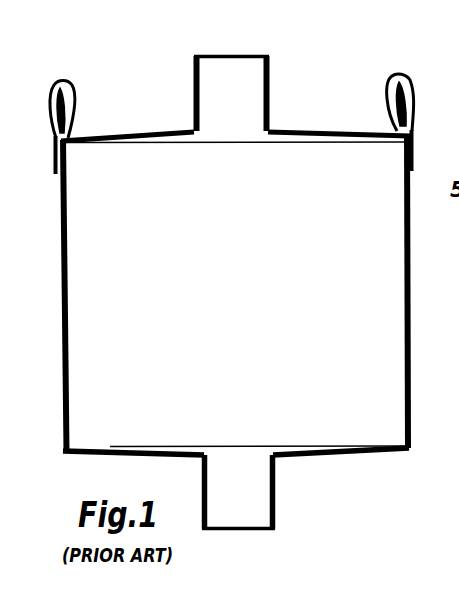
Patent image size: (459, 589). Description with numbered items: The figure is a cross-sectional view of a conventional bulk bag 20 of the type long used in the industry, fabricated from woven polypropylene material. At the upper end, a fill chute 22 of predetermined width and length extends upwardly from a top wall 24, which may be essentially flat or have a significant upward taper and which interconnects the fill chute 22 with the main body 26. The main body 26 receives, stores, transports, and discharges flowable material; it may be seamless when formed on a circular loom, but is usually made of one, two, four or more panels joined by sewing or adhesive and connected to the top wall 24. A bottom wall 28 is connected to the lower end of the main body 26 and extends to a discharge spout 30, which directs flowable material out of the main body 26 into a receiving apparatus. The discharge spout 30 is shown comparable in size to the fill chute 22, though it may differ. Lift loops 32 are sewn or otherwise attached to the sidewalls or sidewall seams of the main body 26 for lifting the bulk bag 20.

The bulk bag 20 is at (323, 86).
The fill chute 22 is at (194, 80).
The top wall 24 is at (135, 136).
The main body 26 is at (246, 268).
The bottom wall 28 is at (370, 453).
The discharge spout 30 is at (276, 490).
The lift loops 32 is at (53, 84).